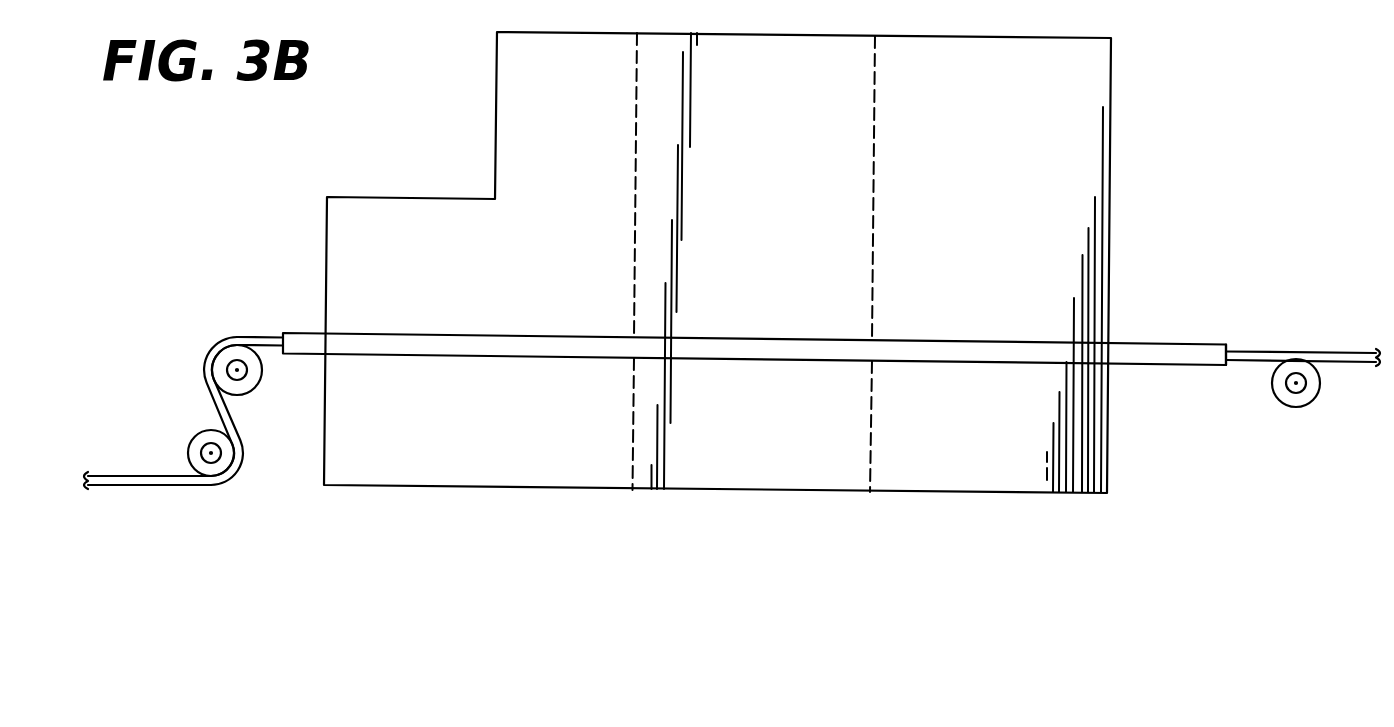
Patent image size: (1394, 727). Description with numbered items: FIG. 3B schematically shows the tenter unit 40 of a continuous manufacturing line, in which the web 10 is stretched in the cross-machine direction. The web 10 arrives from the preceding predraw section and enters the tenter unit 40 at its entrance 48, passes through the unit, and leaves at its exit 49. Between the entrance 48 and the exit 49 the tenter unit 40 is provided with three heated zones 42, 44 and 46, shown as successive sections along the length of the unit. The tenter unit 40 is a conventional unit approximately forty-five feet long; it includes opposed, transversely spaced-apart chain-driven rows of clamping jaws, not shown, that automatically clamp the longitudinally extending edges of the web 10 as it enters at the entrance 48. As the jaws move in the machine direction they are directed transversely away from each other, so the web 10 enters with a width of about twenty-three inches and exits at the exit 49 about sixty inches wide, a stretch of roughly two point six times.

The web 10 is at (259, 325).
The tenter unit 40 is at (1120, 130).
The heated zone 42 is at (590, 155).
The heated zone 44 is at (776, 156).
The heated zone 46 is at (1004, 159).
The entrance 48 is at (314, 362).
The exit 49 is at (1118, 371).